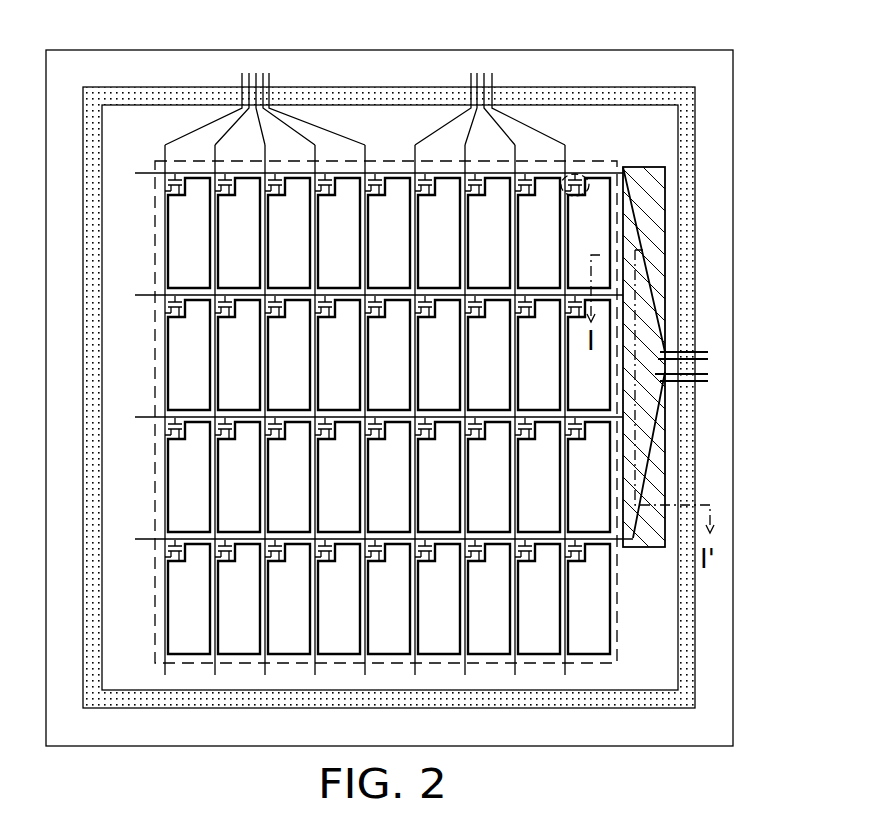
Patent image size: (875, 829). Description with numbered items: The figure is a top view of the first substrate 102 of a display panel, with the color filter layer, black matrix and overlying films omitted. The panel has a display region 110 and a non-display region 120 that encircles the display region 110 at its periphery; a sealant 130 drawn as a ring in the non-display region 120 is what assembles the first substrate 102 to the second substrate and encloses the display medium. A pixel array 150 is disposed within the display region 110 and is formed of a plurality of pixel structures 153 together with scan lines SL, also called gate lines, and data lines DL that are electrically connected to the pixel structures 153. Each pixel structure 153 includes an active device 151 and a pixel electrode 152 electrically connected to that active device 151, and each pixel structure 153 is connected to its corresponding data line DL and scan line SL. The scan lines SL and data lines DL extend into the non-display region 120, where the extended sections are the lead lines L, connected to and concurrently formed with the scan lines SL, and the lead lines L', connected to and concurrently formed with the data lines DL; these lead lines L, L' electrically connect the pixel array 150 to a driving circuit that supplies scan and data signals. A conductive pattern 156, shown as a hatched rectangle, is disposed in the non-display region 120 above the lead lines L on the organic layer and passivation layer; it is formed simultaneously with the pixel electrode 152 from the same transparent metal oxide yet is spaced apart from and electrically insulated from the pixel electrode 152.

The first substrate 102 is at (726, 720).
The display region 110 is at (552, 157).
The non-display region 120 is at (662, 122).
The sealant 130 is at (694, 128).
The pixel array 150 is at (394, 271).
The active device 151 is at (590, 203).
The pixel electrode 152 is at (610, 240).
The pixel structure 153 is at (702, 231).
The conductive pattern 156 is at (656, 183).
The lead lines L is at (717, 367).
The lead lines L' is at (443, 98).
The data line DL is at (164, 150).
The scan line SL is at (140, 173).